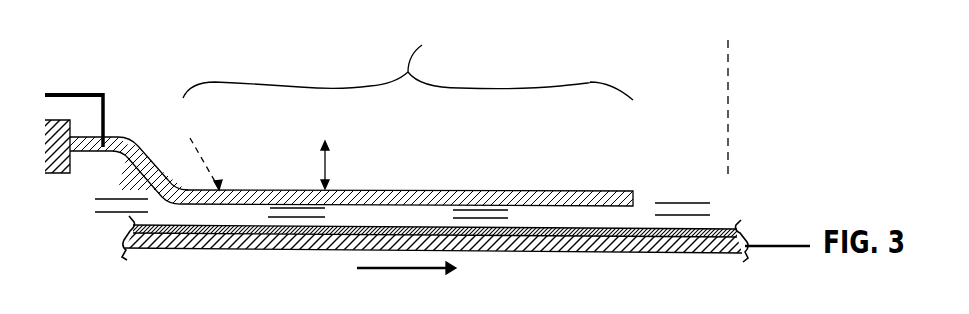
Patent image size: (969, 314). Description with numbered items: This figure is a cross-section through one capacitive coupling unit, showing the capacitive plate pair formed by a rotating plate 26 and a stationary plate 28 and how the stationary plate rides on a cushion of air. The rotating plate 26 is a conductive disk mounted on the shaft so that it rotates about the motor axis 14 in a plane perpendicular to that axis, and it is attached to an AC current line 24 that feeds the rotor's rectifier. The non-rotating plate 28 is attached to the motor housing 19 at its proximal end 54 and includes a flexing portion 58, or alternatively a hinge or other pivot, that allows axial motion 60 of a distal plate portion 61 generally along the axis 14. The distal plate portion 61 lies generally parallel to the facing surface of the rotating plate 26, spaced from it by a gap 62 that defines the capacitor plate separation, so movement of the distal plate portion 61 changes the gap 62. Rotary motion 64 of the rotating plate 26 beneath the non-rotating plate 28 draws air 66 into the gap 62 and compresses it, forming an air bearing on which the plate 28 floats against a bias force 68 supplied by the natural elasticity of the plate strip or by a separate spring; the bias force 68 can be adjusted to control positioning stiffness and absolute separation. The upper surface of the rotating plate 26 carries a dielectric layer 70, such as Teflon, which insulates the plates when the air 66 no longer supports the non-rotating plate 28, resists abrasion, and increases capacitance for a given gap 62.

The axis 14 is at (728, 90).
The motor housing 19 is at (50, 174).
The AC current line 24 is at (765, 248).
The rotating plate 26 is at (668, 252).
The stationary plate 28 is at (456, 190).
The proximal end 54 is at (103, 89).
The flexing portion 58 is at (142, 143).
The axial motion 60 is at (326, 166).
The distal plate portion 61 is at (408, 59).
The gap 62 is at (733, 212).
The rotary motion 64 is at (407, 270).
The air 66 is at (130, 213).
The bias force 68 is at (212, 160).
The dielectric layer 70 is at (573, 238).